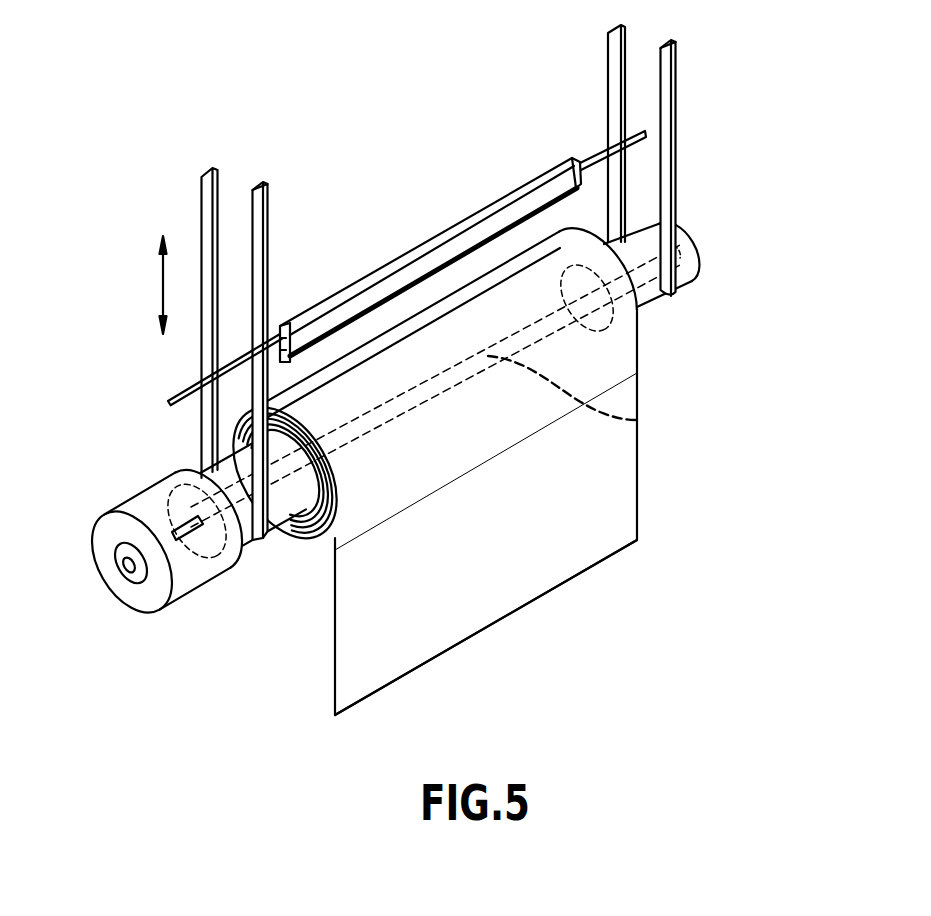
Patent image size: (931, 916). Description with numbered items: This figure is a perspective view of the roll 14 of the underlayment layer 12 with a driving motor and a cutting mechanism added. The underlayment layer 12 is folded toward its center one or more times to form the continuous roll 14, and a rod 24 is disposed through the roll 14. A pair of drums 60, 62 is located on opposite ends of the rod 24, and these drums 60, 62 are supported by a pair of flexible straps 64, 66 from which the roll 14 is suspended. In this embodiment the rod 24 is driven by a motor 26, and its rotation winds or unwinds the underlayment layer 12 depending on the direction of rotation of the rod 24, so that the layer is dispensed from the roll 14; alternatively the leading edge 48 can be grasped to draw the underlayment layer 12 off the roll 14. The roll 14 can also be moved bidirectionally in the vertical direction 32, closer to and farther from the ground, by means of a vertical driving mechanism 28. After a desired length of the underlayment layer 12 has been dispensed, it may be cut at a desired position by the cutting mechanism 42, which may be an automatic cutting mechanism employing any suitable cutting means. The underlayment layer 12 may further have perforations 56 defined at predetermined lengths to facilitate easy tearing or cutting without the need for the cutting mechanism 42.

The underlayment layer 12 is at (637, 480).
The roll 14 is at (294, 536).
The rod 24 is at (637, 420).
The motor 26 is at (134, 498).
The vertical driving mechanism 28 is at (181, 201).
The vertical direction 32 is at (163, 285).
The cutting mechanism 42 is at (434, 236).
The leading edge 48 is at (563, 583).
The perforations 56 is at (364, 533).
The drum 60 is at (211, 473).
The drum 62 is at (690, 265).
The strap 64 is at (263, 238).
The strap 66 is at (668, 74).